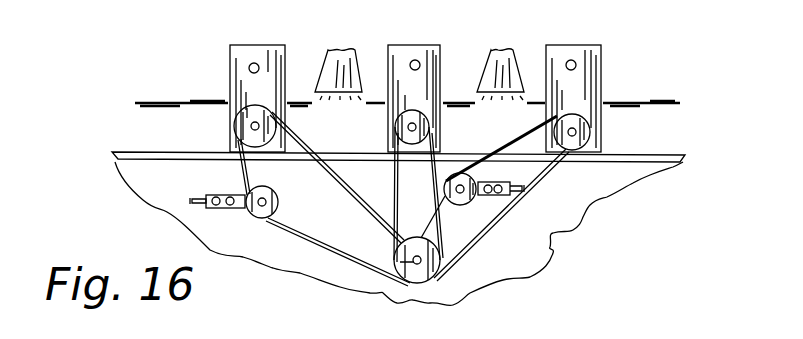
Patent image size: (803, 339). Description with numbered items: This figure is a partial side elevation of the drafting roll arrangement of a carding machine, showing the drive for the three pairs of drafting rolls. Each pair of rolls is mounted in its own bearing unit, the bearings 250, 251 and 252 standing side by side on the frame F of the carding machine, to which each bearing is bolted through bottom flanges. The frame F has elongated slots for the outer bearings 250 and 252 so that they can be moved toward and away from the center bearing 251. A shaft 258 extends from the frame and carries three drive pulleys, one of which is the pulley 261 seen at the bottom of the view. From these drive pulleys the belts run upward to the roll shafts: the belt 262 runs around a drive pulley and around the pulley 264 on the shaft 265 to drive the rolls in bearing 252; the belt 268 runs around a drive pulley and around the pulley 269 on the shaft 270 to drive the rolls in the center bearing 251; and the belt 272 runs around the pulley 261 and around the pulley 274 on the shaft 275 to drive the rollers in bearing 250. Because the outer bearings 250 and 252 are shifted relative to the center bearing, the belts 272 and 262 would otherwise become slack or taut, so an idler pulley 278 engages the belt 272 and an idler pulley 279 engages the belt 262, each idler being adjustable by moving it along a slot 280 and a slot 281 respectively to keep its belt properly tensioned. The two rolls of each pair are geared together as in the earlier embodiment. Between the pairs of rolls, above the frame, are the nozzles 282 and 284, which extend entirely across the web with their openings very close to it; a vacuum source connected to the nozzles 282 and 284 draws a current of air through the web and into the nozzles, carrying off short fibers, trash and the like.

The bearing 250 is at (250, 48).
The bearing 251 is at (421, 50).
The bearing 252 is at (580, 52).
The nozzle 282 is at (351, 52).
The nozzle 284 is at (503, 52).
The shaft 275 is at (252, 126).
The pulley 274 is at (246, 136).
The shaft 270 is at (428, 118).
The pulley 269 is at (428, 134).
The shaft 265 is at (590, 120).
The pulley 264 is at (584, 137).
The idler pulley 278 is at (272, 193).
The slot 280 is at (207, 197).
The idler pulley 279 is at (447, 201).
The slot 281 is at (521, 186).
The pulley 261 is at (430, 276).
The shaft 258 is at (413, 260).
The belt 272 is at (299, 248).
The belt 268 is at (395, 228).
The belt 262 is at (520, 200).
The frame F is at (650, 170).